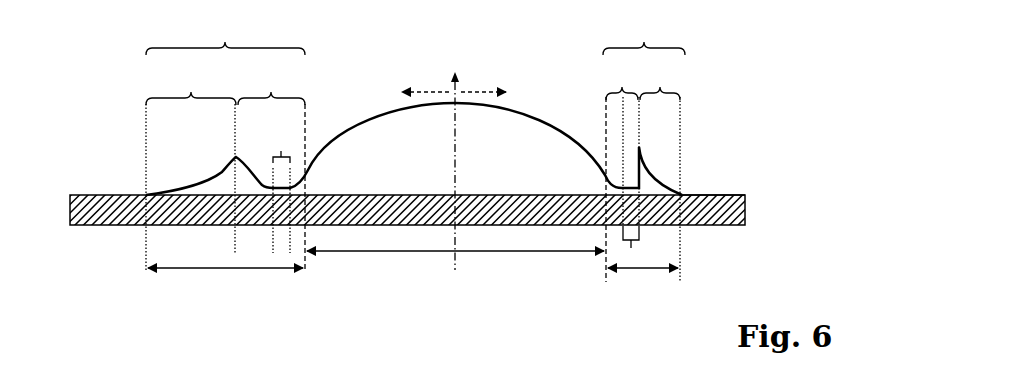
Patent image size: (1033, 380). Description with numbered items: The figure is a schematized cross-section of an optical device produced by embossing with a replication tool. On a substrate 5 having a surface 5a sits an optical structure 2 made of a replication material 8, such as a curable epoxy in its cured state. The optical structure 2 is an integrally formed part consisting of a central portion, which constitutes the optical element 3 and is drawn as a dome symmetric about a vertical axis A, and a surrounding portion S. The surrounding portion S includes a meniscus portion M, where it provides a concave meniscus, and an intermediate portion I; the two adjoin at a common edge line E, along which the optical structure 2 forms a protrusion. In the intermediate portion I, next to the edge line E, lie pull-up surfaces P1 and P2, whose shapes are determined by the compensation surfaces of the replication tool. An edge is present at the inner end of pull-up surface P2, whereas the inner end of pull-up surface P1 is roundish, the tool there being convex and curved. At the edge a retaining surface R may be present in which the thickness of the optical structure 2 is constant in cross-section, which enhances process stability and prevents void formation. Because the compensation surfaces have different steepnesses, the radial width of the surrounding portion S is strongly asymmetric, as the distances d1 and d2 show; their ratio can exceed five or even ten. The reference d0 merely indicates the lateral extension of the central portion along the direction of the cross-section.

The optical structure 2 is at (786, 108).
The optical element 3 is at (548, 165).
The substrate 5 is at (745, 213).
The surface 5a is at (727, 195).
The replication material 8 is at (392, 173).
The axis A is at (465, 158).
The edge line E is at (236, 157).
The pull-up surface P1 is at (252, 163).
The pull-up surface P2 is at (637, 182).
The retaining surface R is at (281, 151).
The surrounding portion S is at (415, 36).
The meniscus portion M is at (413, 83).
The intermediate portion I is at (438, 83).
The lateral extension d0 is at (455, 264).
The distance d1 is at (225, 284).
The distance d2 is at (643, 284).